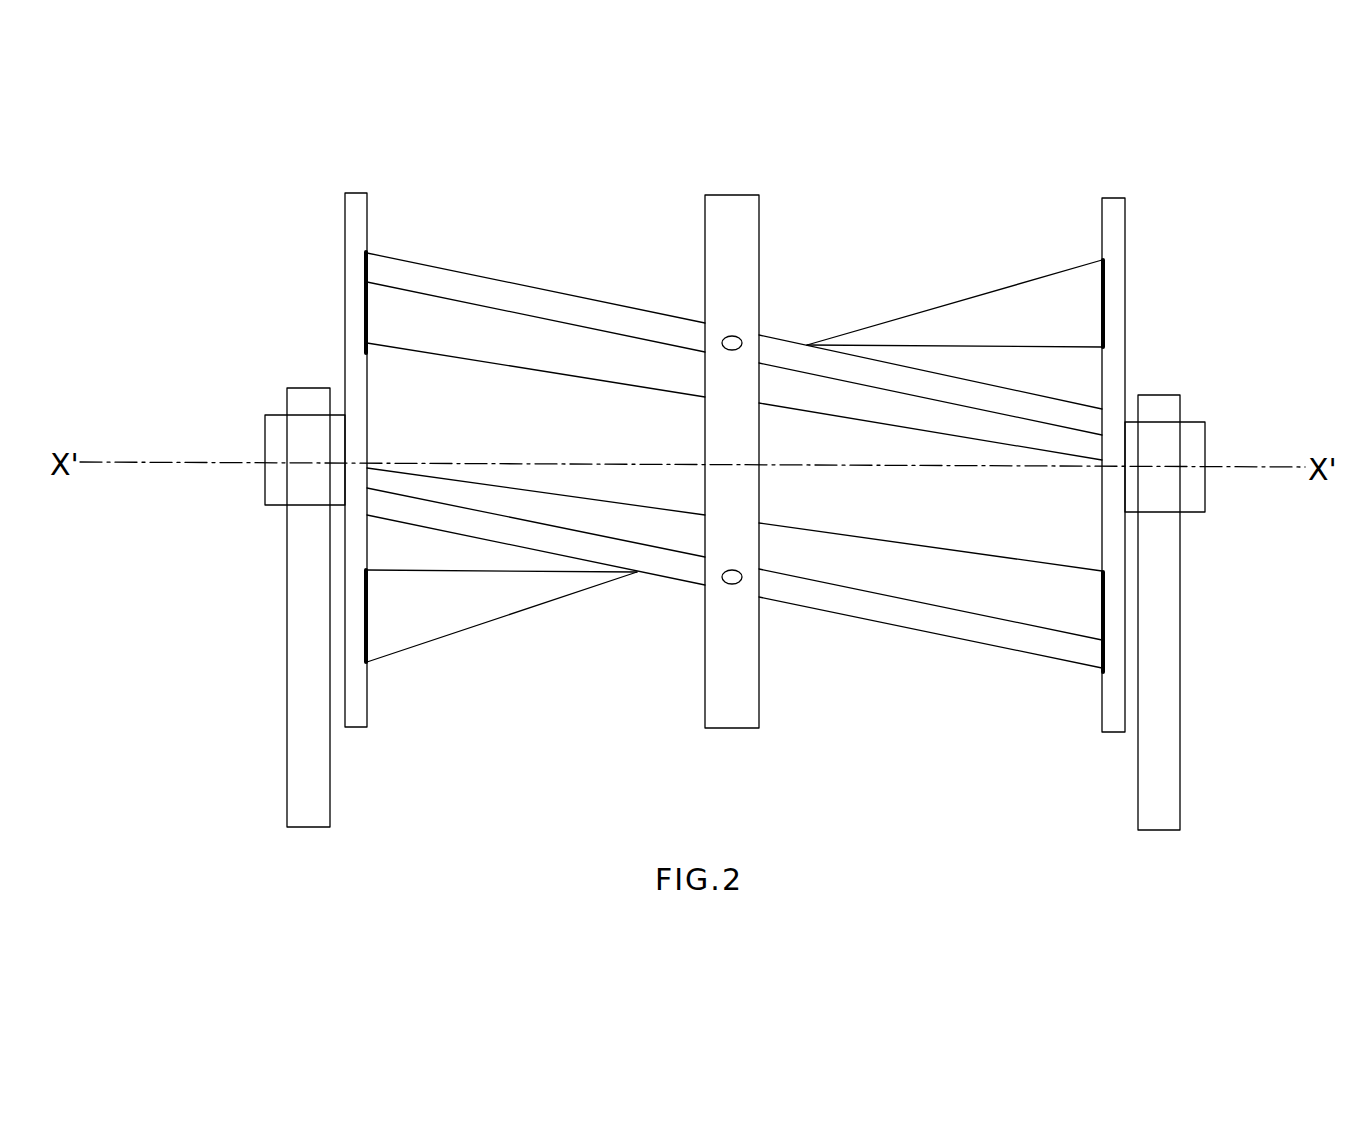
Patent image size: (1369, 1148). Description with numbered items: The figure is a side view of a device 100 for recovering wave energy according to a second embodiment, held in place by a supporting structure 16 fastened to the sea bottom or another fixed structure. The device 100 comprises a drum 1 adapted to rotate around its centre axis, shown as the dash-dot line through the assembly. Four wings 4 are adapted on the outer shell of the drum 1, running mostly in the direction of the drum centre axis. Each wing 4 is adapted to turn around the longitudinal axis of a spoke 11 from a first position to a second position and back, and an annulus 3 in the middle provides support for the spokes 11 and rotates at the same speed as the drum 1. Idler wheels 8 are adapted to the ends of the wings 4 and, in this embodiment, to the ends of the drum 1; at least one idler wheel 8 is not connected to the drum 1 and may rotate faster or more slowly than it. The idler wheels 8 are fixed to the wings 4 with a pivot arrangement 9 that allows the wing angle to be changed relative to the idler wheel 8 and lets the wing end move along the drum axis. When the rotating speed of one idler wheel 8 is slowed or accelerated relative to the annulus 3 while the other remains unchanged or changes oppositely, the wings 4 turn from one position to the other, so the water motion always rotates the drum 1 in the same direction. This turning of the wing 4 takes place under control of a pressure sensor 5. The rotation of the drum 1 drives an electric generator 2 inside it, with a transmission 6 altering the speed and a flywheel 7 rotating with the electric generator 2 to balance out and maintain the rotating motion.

The drum 1 is at (562, 426).
The electric generator 2 is at (906, 245).
The annulus 3 is at (748, 243).
The wing 4 is at (527, 330).
The pressure sensor 5 is at (320, 255).
The transmission 6 is at (600, 245).
The flywheel 7 is at (650, 248).
The idler wheel 8 is at (362, 218).
The pivot arrangement 9 is at (367, 303).
The spoke 11 is at (742, 337).
The supporting structure 16 is at (308, 657).
The device 100 is at (1240, 213).